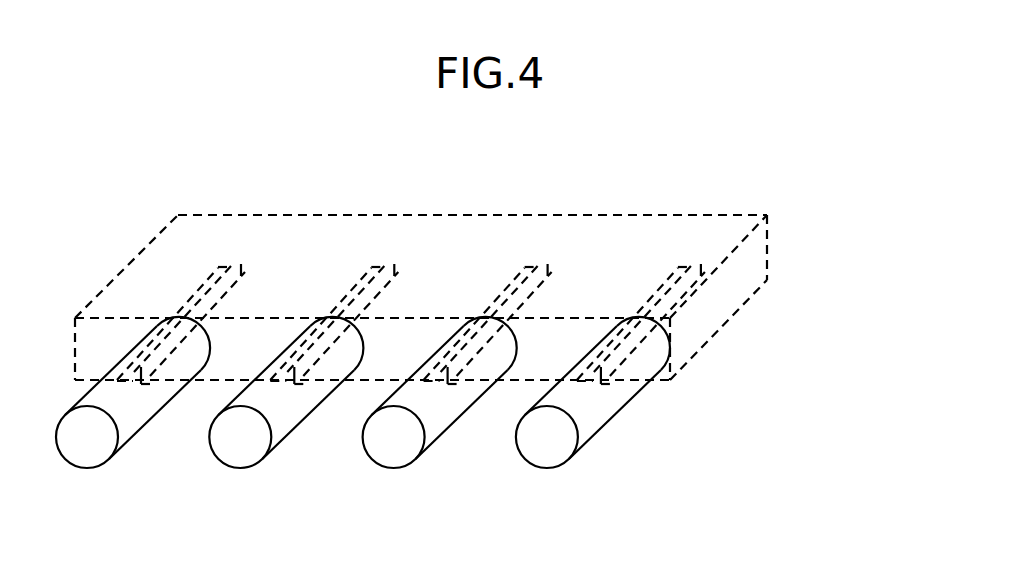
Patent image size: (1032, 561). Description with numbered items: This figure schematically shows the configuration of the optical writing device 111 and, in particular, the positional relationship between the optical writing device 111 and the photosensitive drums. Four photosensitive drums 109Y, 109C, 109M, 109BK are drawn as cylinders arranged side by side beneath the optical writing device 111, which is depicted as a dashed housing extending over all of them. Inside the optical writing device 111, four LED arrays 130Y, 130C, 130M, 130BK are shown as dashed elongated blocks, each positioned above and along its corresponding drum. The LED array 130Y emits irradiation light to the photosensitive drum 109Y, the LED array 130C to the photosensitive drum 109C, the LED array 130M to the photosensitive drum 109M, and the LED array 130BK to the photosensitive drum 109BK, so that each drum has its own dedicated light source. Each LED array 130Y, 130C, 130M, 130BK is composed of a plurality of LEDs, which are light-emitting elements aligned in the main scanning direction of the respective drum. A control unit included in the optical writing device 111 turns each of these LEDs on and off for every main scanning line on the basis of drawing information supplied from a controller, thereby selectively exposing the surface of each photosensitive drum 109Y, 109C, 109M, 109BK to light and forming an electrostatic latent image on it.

The optical writing device 111 is at (767, 215).
The photosensitive drum 109Y is at (98, 466).
The photosensitive drum 109C is at (251, 466).
The photosensitive drum 109M is at (405, 466).
The photosensitive drum 109BK is at (558, 466).
The LED array 130Y is at (235, 268).
The LED array 130C is at (385, 268).
The LED array 130M is at (542, 268).
The LED array 130BK is at (697, 268).